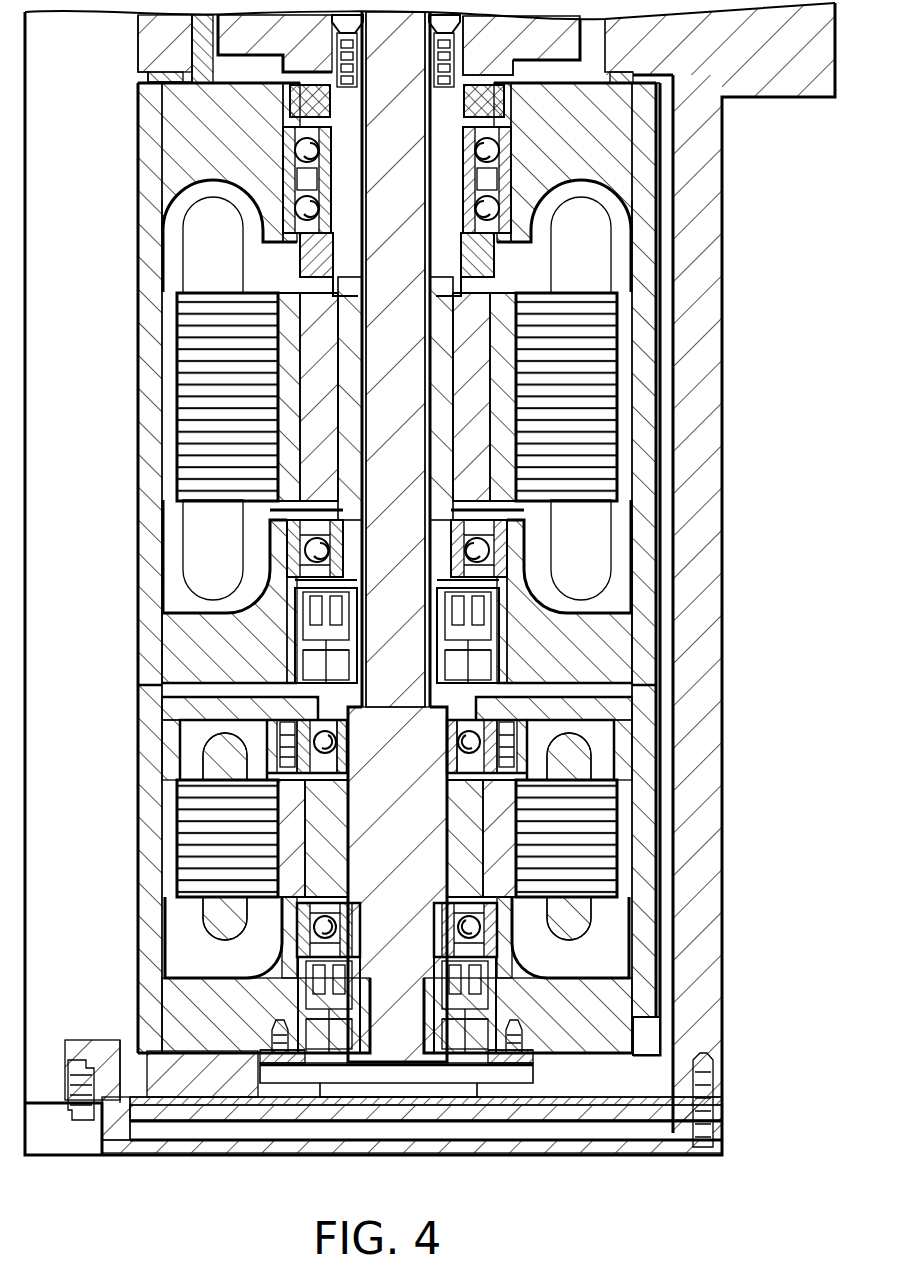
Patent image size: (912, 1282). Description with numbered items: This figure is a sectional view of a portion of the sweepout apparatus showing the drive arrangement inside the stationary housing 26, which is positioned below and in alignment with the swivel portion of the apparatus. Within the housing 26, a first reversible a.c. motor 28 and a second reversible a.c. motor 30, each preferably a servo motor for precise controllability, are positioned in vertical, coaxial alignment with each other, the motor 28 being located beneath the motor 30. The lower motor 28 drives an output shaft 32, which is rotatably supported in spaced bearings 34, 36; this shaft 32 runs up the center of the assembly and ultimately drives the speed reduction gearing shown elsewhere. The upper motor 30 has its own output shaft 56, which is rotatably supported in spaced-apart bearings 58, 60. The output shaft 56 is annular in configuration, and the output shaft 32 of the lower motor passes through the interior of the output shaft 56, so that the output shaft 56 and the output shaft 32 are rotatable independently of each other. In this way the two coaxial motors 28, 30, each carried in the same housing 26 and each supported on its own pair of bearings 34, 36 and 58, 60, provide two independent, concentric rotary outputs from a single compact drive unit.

The stationary housing 26 is at (725, 752).
The first reversible a.c. motor 28 is at (622, 848).
The second reversible a.c. motor 30 is at (617, 417).
The output shaft 32 is at (411, 851).
The bearing 34 is at (490, 930).
The bearing 36 is at (443, 740).
The output shaft 56 is at (442, 358).
The bearing 58 is at (455, 545).
The bearing 60 is at (457, 162).